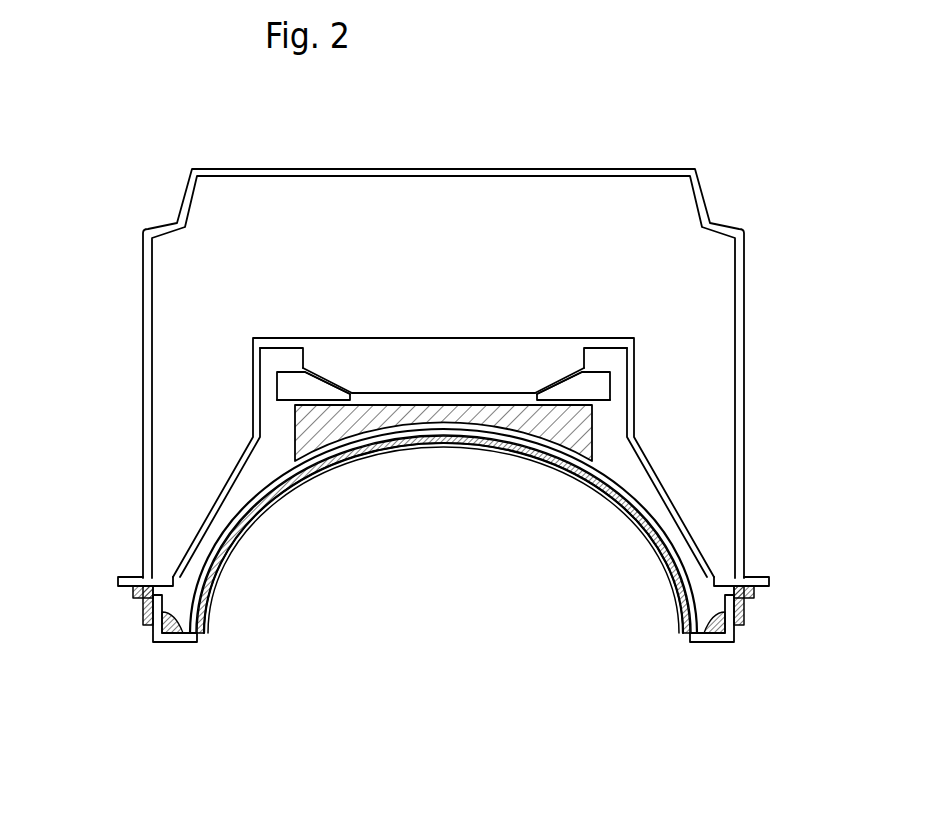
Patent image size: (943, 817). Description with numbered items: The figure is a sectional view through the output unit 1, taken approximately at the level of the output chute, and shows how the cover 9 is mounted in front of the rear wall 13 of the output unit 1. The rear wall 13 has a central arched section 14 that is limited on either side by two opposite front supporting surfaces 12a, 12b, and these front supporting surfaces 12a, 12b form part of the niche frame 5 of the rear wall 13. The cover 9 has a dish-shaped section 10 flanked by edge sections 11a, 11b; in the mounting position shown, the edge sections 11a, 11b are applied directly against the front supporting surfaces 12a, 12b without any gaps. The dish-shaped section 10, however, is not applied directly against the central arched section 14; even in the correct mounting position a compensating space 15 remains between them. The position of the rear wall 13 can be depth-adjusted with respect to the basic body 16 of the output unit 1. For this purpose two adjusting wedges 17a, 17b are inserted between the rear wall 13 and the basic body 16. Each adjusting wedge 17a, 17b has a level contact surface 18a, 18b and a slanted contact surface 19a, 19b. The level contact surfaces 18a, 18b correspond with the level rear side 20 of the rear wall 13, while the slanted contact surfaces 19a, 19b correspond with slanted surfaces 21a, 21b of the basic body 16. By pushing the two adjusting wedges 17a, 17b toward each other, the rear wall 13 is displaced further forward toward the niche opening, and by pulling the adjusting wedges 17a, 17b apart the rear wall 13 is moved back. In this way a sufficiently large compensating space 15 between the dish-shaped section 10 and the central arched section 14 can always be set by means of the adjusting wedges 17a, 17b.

The output unit 1 is at (472, 202).
The niche frame 5 is at (126, 640).
The cover 9 is at (584, 484).
The dish-shaped section 10 is at (448, 440).
The edge section 11a is at (178, 643).
The edge section 11b is at (711, 643).
The front supporting surface 12a is at (150, 608).
The front supporting surface 12b is at (737, 608).
The rear wall 13 is at (526, 430).
The central arched section 14 is at (578, 444).
The compensating space 15 is at (397, 430).
The basic body 16 is at (475, 348).
The adjusting wedge 17a is at (288, 385).
The adjusting wedge 17b is at (599, 385).
The level contact surface 18a is at (280, 402).
The level contact surface 18b is at (607, 402).
The slanted contact surface 19a is at (302, 376).
The slanted contact surface 19b is at (585, 376).
The level rear side 20 is at (412, 400).
The slanted surface 21a is at (319, 372).
The slanted surface 21b is at (563, 372).